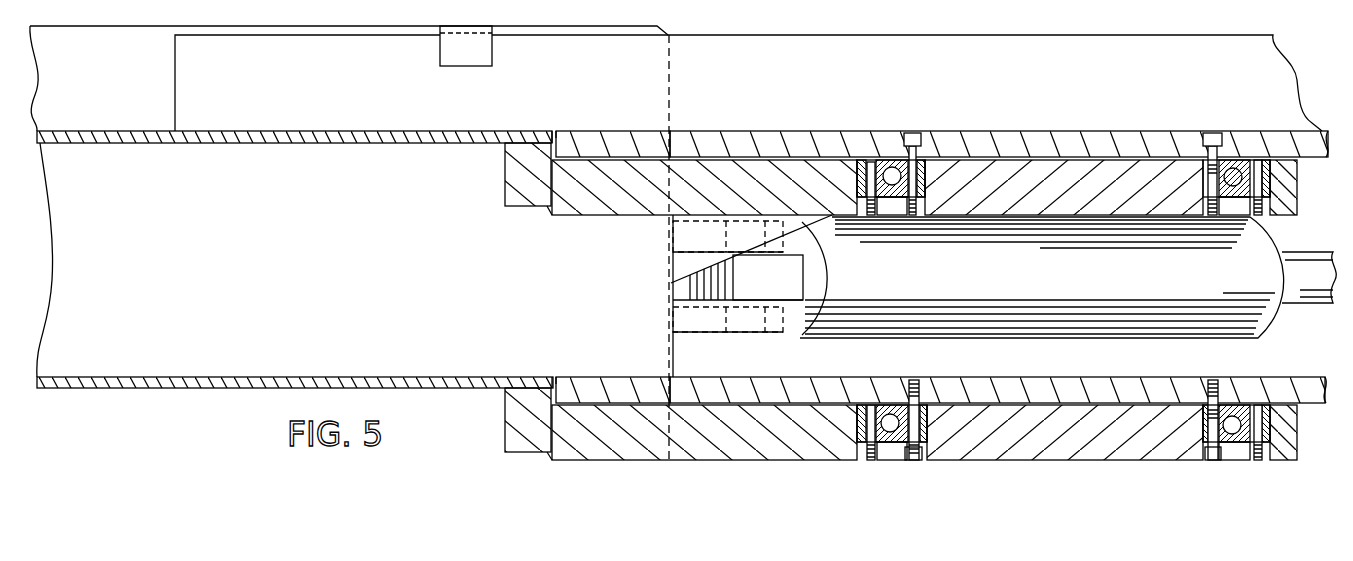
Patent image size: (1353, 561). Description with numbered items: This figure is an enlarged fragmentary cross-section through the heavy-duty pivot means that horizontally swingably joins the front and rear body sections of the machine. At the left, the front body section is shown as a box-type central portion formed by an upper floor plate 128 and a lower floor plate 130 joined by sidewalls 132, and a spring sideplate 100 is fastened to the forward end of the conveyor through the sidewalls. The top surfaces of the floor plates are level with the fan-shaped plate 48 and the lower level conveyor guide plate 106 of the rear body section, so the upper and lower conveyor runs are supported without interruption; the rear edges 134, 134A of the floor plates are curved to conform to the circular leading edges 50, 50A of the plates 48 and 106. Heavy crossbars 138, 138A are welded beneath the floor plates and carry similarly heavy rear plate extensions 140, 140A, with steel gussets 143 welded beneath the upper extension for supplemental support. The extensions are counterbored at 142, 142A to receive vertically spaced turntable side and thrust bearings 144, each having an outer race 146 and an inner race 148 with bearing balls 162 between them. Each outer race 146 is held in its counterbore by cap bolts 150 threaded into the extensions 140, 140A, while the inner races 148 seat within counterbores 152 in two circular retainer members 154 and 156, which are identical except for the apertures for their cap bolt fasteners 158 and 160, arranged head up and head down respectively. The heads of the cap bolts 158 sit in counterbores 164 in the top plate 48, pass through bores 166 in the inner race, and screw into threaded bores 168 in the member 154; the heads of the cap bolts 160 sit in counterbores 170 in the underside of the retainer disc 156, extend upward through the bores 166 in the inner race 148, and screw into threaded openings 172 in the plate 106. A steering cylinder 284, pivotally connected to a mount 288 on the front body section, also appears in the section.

The sidewall 132 is at (76, 90).
The spring sideplate 100 is at (710, 85).
The upper floor plate 128 is at (200, 143).
The lower floor plate 130 is at (170, 377).
The leading edge 50 is at (552, 132).
The leading edge 50A is at (552, 378).
The rear edge 134 is at (558, 134).
The rear edge 134A is at (558, 378).
The crossbar 138 is at (517, 160).
The crossbar 138A is at (512, 432).
The rear plate extension 140 is at (618, 212).
The rear plate extension 140A is at (735, 460).
The fan-shaped plate 48 is at (1125, 148).
The lower level conveyor guide plate 106 is at (1103, 390).
The counterbore 142 is at (858, 162).
The counterbore 142A is at (860, 405).
The turntable side and thrust bearing 144 is at (880, 212).
The outer race 146 is at (910, 150).
The inner race 148 is at (928, 162).
The cap bolt 150 is at (884, 165).
The counterbore 152 is at (924, 200).
The cap bolt fastener 158 is at (920, 150).
The steel gusset 143 is at (805, 218).
The circular retainer member 154 is at (1030, 203).
The circular retainer member 156 is at (1030, 455).
The steering cylinder 284 is at (1120, 274).
The mount 288 is at (733, 336).
The bore 166 is at (1208, 160).
The counterbore 164 is at (1213, 148).
The bearing ball 162 is at (1250, 160).
The threaded opening 172 is at (1212, 382).
The threaded bore 168 is at (912, 460).
The counterbore 170 is at (1210, 462).
The cap bolt 160 is at (1222, 456).